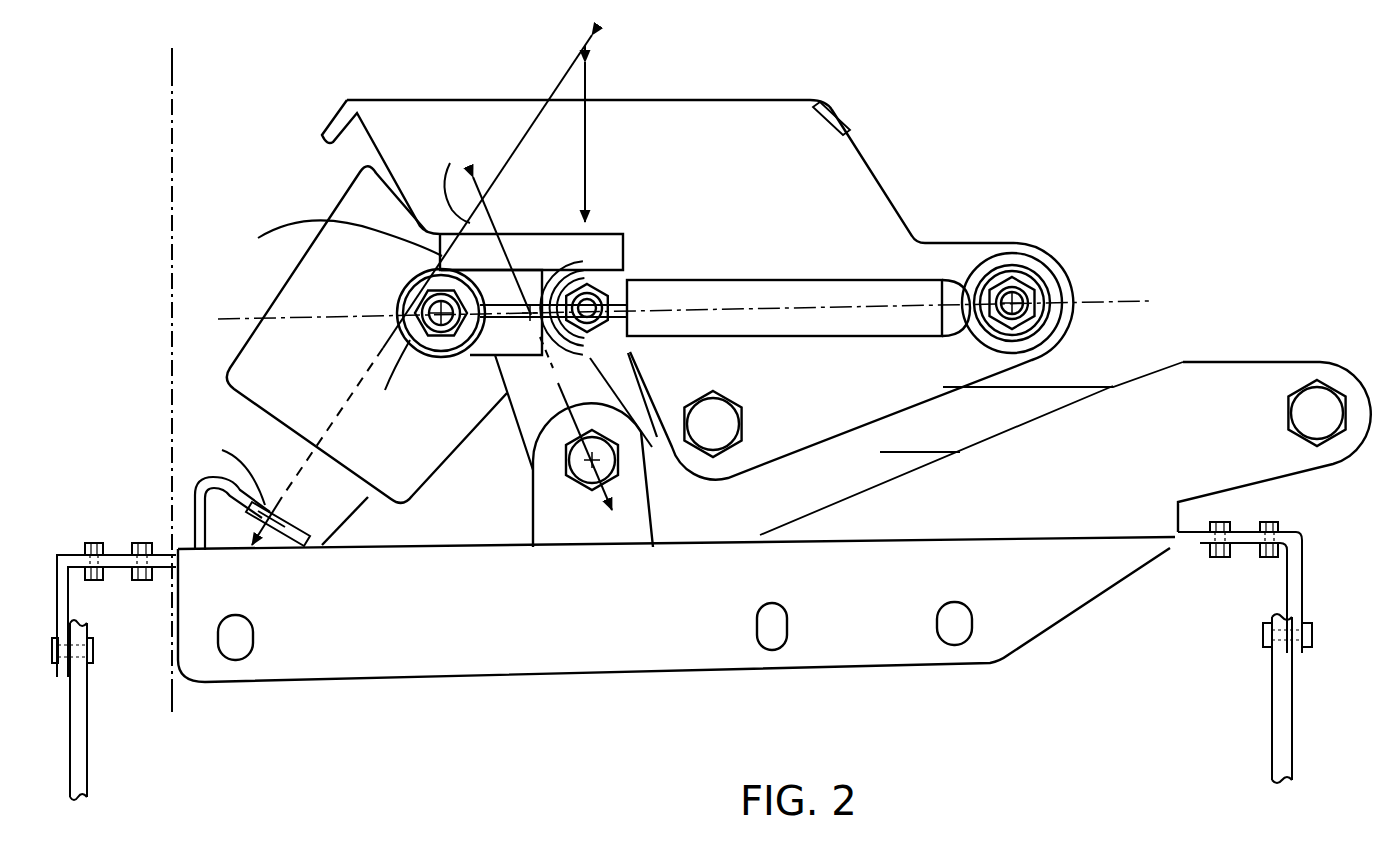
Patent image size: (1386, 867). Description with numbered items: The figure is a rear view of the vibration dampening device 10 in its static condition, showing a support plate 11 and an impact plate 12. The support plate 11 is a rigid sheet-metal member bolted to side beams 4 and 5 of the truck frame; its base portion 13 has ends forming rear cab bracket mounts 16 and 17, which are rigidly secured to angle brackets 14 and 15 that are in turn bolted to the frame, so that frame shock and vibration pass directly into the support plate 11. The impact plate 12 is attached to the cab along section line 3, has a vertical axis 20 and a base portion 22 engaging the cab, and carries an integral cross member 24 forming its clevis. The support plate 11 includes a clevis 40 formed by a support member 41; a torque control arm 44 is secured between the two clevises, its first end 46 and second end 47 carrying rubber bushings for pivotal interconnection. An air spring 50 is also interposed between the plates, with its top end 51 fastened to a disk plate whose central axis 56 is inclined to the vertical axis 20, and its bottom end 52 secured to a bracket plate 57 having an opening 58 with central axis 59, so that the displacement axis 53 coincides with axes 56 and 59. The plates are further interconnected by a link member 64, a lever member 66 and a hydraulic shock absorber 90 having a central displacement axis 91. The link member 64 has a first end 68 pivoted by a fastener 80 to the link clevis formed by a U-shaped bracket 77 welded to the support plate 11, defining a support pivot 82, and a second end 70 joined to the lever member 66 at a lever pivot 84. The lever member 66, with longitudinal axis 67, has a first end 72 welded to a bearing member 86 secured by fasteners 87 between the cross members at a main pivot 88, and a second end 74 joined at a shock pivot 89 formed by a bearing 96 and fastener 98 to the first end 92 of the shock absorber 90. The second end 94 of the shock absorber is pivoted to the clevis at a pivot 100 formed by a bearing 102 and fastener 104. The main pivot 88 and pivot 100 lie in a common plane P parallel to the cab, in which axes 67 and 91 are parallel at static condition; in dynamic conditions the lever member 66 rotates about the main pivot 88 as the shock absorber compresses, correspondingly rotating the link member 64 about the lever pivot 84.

The section line 3- 3 is at (172, 57).
The side beam 4 is at (85, 742).
The side beam 5 is at (1285, 727).
The vibration dampening device 10 is at (1058, 90).
The support plate 11 is at (560, 682).
The impact plate 12 is at (752, 92).
The base portion 13 is at (464, 546).
The angle bracket 14 is at (67, 607).
The angle bracket 15 is at (1297, 580).
The rear cab bracket mount 16 is at (68, 555).
The rear cab bracket mount 17 is at (1238, 538).
The vertical axis 20 is at (590, 130).
The base portion 22 is at (433, 100).
The cross member 24 is at (880, 205).
The clevis 40 is at (1318, 360).
The support member 41 is at (1223, 367).
The torque control arm 44 is at (1060, 390).
The first end 46 is at (763, 468).
The second end 47 is at (1328, 468).
The air spring 50 is at (233, 397).
The top end 51 is at (343, 163).
The bottom end 52 is at (337, 538).
The displacement axis 53 is at (334, 243).
The central axis 56 is at (528, 315).
The bracket plate 57 is at (197, 487).
The opening 58 is at (263, 527).
The central axis 59 is at (228, 470).
The link member 64 is at (523, 420).
The lever member 66 is at (480, 360).
The longitudinal axis 67 is at (567, 270).
The first end 68 is at (527, 472).
The second end 70 is at (556, 262).
The first end 72 is at (602, 257).
The second end 74 is at (383, 325).
The U-shaped bracket 77 is at (647, 513).
The fastener 80 is at (574, 488).
The support pivot 82 is at (604, 464).
The lever pivot 84 is at (524, 326).
The bearing member 86 is at (633, 372).
The fastener 87 is at (600, 298).
The main pivot 88 is at (600, 330).
The shock pivot 89 is at (430, 307).
The hydraulic shock absorber 90 is at (797, 280).
The central displacement axis 91 is at (231, 318).
The first end 92 is at (443, 368).
The second end 94 is at (975, 267).
The bearing 96 is at (395, 305).
The fastener 98 is at (383, 381).
The pivot 100 is at (1040, 290).
The bearing 102 is at (1052, 296).
The fastener 104 is at (1020, 292).
The common plane P is at (1120, 303).